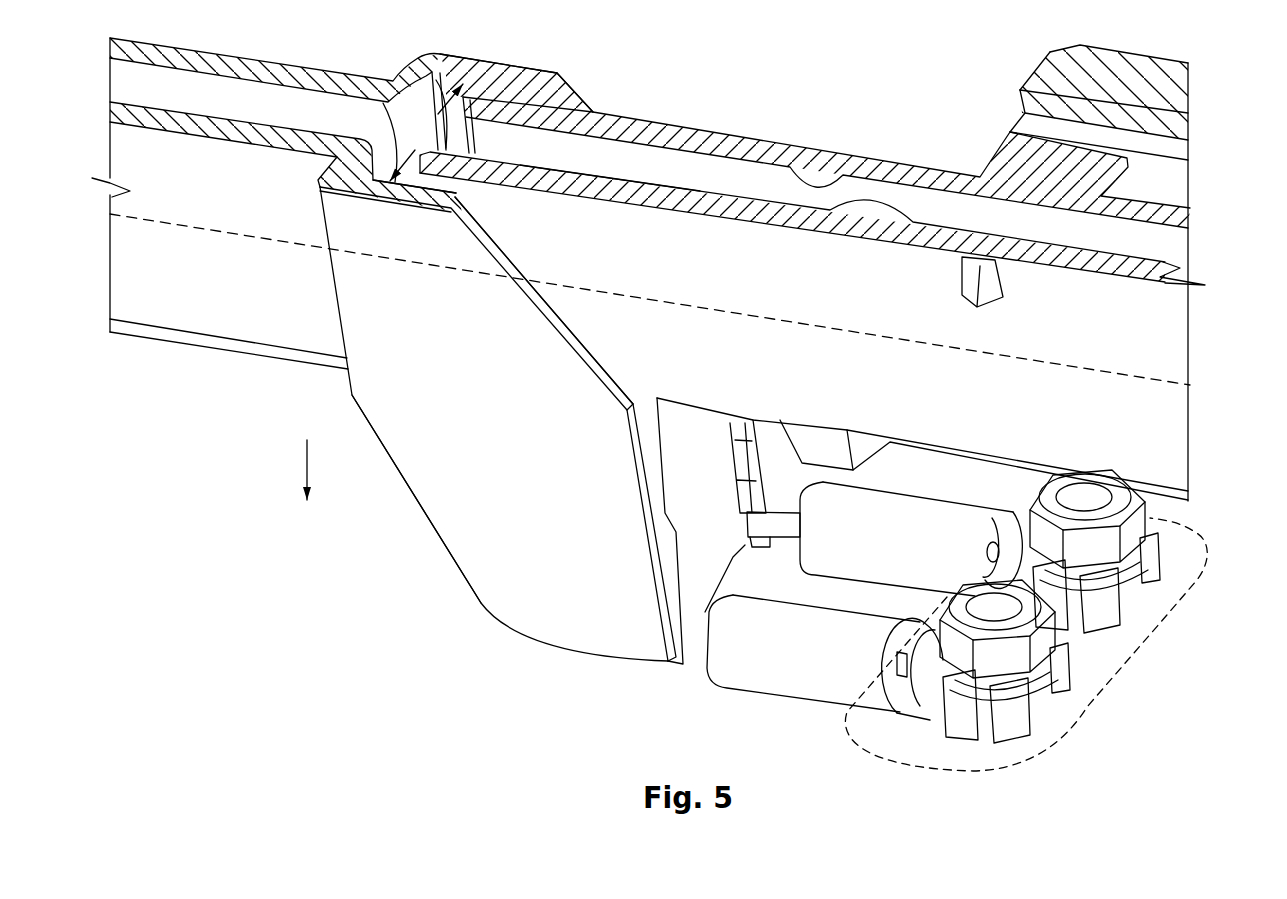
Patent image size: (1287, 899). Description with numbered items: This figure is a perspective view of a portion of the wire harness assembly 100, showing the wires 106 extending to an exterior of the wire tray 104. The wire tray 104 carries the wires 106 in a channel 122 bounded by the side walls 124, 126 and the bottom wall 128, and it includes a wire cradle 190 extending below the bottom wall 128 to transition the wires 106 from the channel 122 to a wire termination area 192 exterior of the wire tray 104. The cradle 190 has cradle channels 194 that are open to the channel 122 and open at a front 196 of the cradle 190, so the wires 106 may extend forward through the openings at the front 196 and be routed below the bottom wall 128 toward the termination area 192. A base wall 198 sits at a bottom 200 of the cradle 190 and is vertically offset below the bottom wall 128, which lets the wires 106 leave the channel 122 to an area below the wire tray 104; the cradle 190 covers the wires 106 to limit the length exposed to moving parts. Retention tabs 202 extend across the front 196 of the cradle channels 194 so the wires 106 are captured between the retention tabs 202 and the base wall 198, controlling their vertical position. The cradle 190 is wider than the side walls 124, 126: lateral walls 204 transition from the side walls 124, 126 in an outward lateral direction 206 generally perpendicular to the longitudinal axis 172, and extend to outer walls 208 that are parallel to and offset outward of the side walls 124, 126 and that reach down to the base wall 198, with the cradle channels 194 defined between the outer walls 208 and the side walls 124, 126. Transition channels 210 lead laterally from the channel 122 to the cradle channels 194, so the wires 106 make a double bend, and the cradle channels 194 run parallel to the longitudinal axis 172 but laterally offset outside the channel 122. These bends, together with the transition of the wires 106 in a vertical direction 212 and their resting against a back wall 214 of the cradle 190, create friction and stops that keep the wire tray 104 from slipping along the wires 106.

The wire harness assembly 100 is at (860, 62).
The wire tray 104 is at (1173, 360).
The wires 106 is at (699, 634).
The channel 122 is at (270, 102).
The side wall 124 is at (700, 145).
The side wall 126 is at (617, 183).
The bottom wall 128 is at (257, 349).
The longitudinal axis 172 is at (1180, 384).
The wire cradle 190 is at (504, 568).
The wire termination area 192 is at (1113, 672).
The cradle channel 194 is at (656, 442).
The front 196 is at (723, 503).
The base wall 198 is at (712, 607).
The bottom 200 is at (629, 656).
The retention tab 202 is at (748, 440).
The lateral wall 204 is at (477, 66).
The lateral direction 206 is at (395, 181).
The outer wall 208 is at (573, 96).
The transition channel 210 is at (457, 102).
The vertical direction 212 is at (306, 472).
The back wall 214 is at (429, 520).